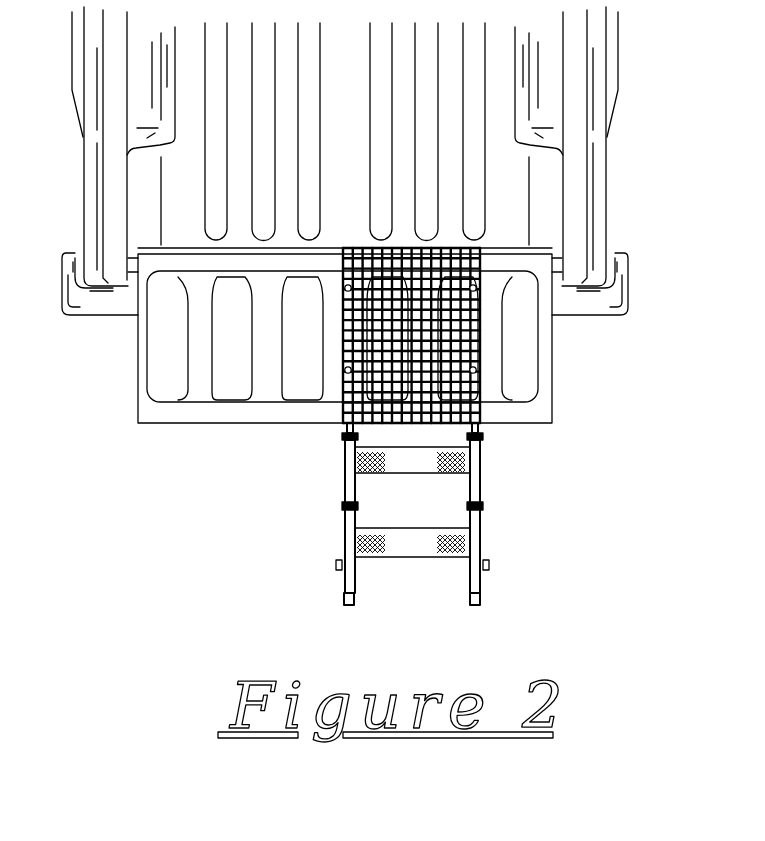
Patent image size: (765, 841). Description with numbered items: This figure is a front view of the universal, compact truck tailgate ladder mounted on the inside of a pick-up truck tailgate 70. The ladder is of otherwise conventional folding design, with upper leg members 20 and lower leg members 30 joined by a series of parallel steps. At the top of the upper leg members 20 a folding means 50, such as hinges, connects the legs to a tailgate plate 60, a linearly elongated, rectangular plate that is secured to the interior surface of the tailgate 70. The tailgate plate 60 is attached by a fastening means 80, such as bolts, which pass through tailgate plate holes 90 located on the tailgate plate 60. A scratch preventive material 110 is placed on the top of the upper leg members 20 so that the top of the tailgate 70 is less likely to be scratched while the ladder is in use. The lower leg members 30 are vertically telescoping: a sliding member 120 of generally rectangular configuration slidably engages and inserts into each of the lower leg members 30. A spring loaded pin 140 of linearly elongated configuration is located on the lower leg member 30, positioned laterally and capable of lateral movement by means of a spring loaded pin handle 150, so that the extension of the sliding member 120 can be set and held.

The upper leg members 20 is at (436, 525).
The lower leg members 30 is at (482, 530).
The folding means 50 is at (340, 507).
The tailgate plate 60 is at (480, 388).
The tailgate 70 is at (188, 423).
The fastening means 80 is at (348, 373).
The tailgate plate holes 90 is at (478, 373).
The scratch preventive material 110 is at (473, 483).
The sliding member 120 is at (345, 600).
The spring loaded pin 140 is at (487, 572).
The spring loaded pin handle 150 is at (490, 565).